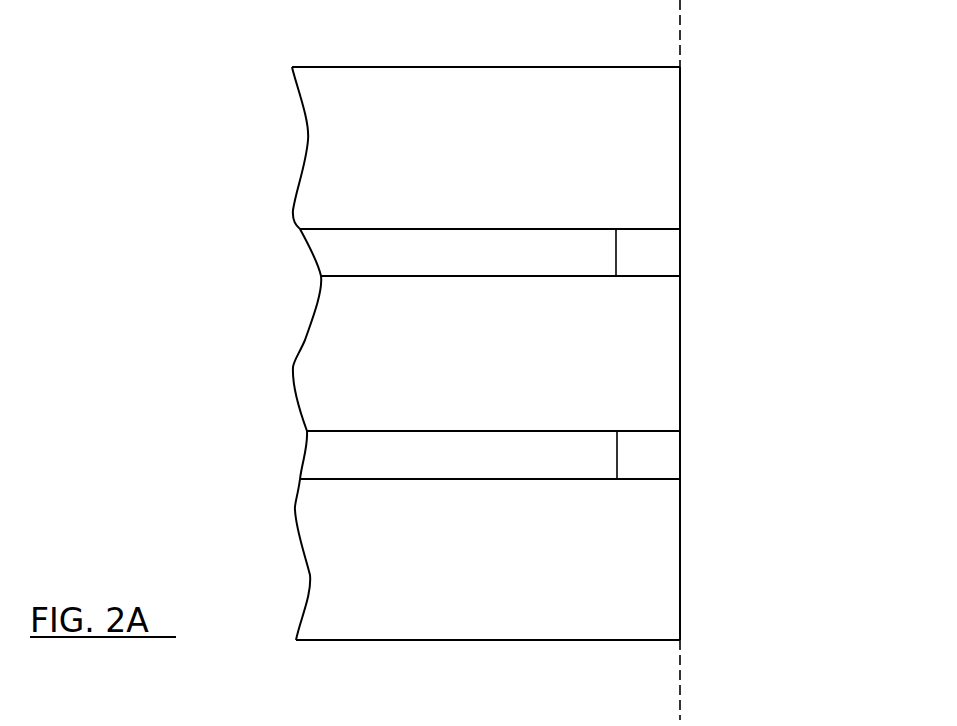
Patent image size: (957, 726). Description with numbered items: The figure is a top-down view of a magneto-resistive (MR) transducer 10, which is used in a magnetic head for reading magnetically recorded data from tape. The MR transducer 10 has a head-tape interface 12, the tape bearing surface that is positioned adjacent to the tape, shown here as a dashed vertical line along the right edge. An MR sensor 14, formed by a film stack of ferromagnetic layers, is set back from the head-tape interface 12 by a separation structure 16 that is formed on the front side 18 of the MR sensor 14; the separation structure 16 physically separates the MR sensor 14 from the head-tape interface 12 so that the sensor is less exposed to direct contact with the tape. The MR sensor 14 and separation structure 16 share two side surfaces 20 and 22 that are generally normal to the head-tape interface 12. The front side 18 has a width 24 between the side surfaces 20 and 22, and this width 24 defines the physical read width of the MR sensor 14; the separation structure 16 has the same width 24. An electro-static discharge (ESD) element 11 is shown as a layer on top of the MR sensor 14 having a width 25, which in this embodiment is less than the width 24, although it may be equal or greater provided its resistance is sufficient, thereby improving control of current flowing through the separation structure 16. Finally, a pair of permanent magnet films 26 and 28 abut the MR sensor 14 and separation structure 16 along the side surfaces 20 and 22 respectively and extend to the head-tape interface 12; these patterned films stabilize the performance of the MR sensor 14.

The magneto-resistive transducer 10 is at (727, 115).
The electro-static discharge element 11 is at (328, 353).
The head-tape interface 12 is at (683, 688).
The MR sensor 14 is at (558, 467).
The separation structure 16 is at (662, 247).
The front side 18 is at (617, 449).
The side surface 20 is at (338, 231).
The side surface 22 is at (322, 479).
The width 24 is at (589, 477).
The width 25 is at (542, 278).
The permanent magnet film 26 is at (482, 169).
The permanent magnet film 28 is at (497, 569).